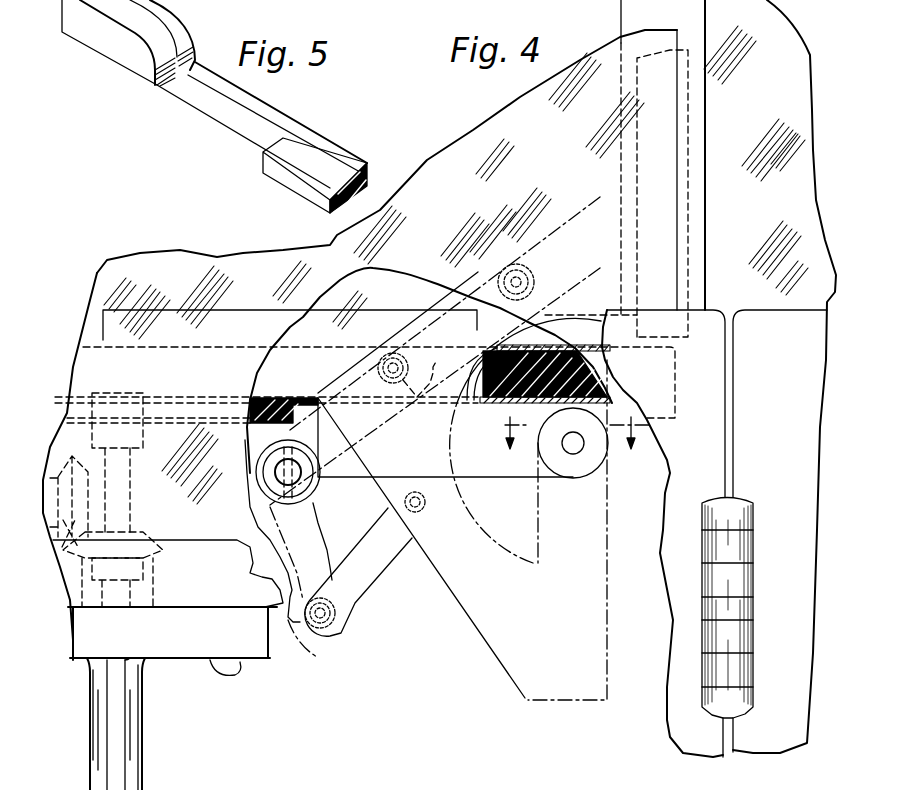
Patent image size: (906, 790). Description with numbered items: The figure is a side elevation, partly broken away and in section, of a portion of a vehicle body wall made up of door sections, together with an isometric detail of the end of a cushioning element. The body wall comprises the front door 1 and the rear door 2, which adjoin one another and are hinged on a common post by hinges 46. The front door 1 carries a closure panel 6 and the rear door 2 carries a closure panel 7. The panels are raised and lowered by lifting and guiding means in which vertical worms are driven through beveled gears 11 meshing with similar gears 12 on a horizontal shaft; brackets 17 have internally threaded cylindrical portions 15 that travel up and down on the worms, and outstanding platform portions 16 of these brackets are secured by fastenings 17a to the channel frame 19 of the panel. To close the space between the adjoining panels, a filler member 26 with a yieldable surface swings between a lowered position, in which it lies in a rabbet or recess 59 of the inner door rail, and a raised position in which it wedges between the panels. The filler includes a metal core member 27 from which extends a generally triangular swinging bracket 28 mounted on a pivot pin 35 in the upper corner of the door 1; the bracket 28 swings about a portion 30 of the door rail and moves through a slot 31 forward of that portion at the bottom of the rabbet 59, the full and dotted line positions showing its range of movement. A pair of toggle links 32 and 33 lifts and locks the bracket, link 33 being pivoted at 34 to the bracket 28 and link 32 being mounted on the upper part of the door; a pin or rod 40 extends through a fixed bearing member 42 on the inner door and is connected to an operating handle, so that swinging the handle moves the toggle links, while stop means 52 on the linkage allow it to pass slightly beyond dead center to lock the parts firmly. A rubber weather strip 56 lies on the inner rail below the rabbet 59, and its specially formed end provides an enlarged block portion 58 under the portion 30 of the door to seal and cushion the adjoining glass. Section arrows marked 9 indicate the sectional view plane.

In FIG. 4, the door 1 is at (677, 723).
In FIG. 4, the rear door 2 is at (721, 378).
In FIG. 4, the closure panel 6 is at (520, 117).
In FIG. 4, the closure panel 7 is at (742, 155).
In FIG. 4, the section line 9- 9 is at (566, 438).
In FIG. 4, the beveled gears 11 is at (147, 530).
In FIG. 4, the gears 12 is at (60, 577).
In FIG. 4, the internally threaded cylindrical portions 15 is at (145, 747).
In FIG. 4, the platform portions 16 is at (100, 638).
In FIG. 4, the brackets 17 is at (113, 710).
In FIG. 4, the fastenings 17a is at (235, 667).
In FIG. 4, the channel frame 19 is at (168, 573).
In FIG. 4, the filler member or strip 26 is at (628, 13).
In FIG. 4, the core member 27 is at (688, 123).
In FIG. 4, the swinging bracket 28 is at (580, 190).
In FIG. 4, the portion of the door rail 30 is at (517, 347).
In FIG. 4, the slot 31 is at (468, 400).
In FIG. 4, the toggle link 32 is at (277, 470).
In FIG. 4, the toggle link 33 is at (428, 322).
In FIG. 4, the pivot 34 is at (535, 290).
In FIG. 4, the pivot pin 35 is at (583, 451).
In FIG. 4, the pin or rod 40 is at (276, 472).
In FIG. 4, the fixed bearing member 42 is at (288, 531).
In FIG. 4, the hinges 46 is at (753, 520).
In FIG. 4, the stop means 52 is at (328, 643).
In FIG. 5, the weather strip 56 is at (313, 133).
In FIG. 5, the enlarged block portion 58 is at (130, 58).
In FIG. 4, the enlarged block portion 58 is at (600, 380).
In FIG. 4, the rabbet or recess 59 is at (297, 397).